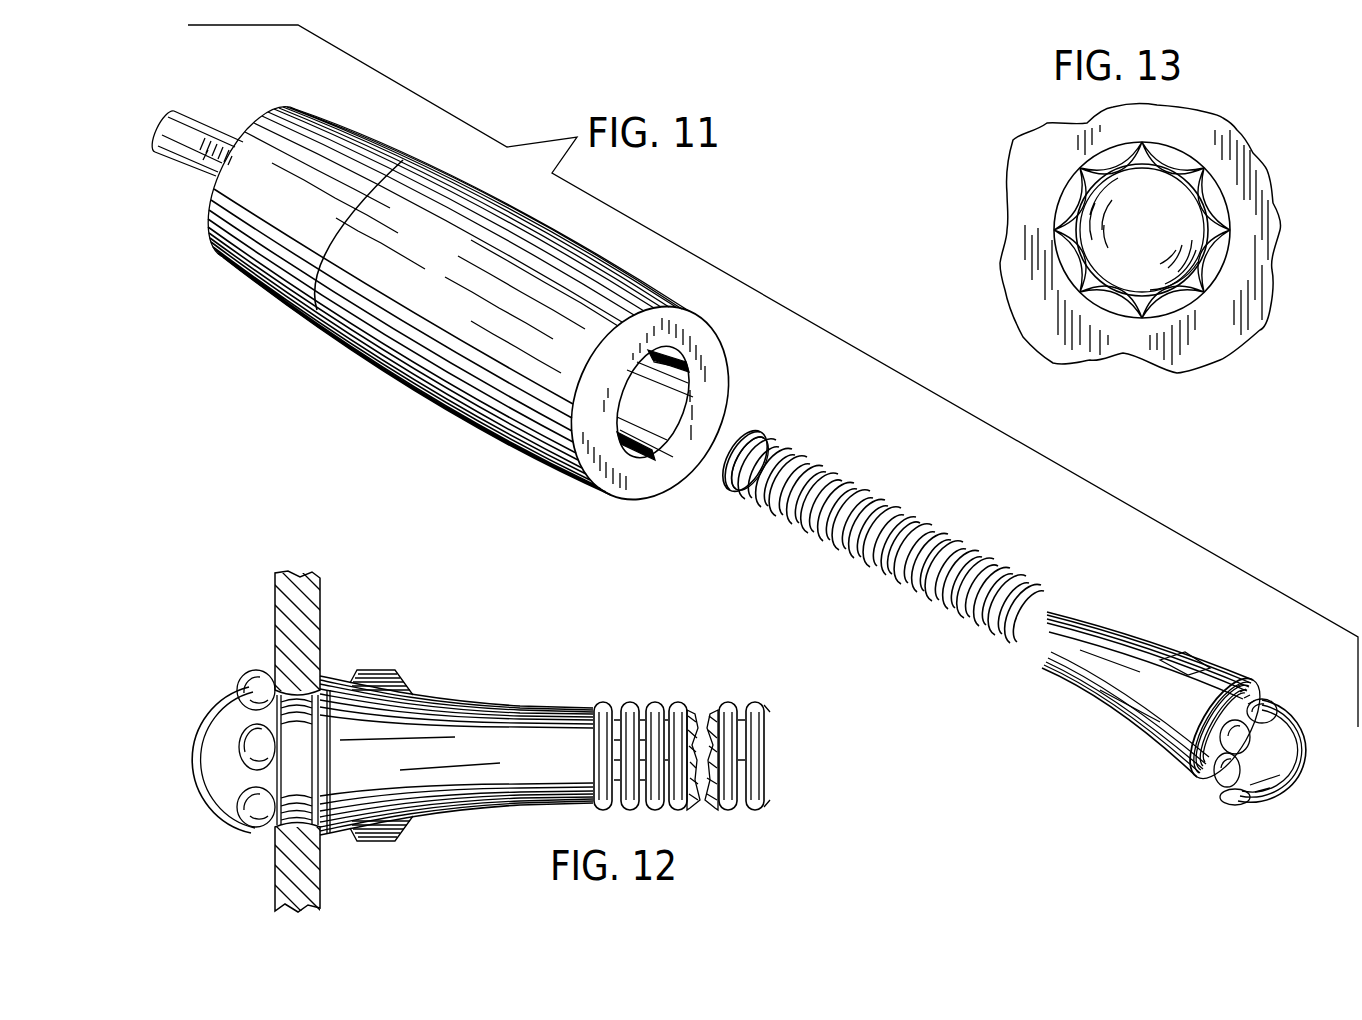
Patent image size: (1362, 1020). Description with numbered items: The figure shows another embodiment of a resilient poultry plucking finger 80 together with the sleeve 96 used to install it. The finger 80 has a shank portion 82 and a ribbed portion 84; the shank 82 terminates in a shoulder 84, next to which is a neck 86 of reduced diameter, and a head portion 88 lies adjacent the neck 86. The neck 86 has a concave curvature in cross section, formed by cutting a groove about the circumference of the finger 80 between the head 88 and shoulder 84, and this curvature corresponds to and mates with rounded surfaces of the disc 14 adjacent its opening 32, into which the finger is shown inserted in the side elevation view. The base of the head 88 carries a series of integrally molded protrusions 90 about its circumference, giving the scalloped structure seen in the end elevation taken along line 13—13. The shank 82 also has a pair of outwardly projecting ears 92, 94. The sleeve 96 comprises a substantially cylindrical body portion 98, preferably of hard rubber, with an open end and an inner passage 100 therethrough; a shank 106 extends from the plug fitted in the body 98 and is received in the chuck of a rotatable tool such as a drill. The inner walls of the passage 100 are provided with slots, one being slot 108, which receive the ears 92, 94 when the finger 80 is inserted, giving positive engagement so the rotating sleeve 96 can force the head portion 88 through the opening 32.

In FIG. 12, the disc 14 is at (320, 610).
In FIG. 13, the disc 14 is at (1253, 177).
In FIG. 12, the opening 32 is at (333, 678).
In FIG. 11, the resilient finger 80 is at (883, 590).
In FIG. 11, the shank portion 82 is at (1143, 643).
In FIG. 12, the shank portion 82 is at (485, 702).
In FIG. 11, the ribbed portion 84 is at (880, 493).
In FIG. 12, the ribbed portion 84 is at (653, 708).
In FIG. 11, the neck 86 is at (1257, 692).
In FIG. 11, the head portion 88 is at (1287, 770).
In FIG. 12, the head portion 88 is at (200, 760).
In FIG. 13, the head portion 88 is at (1167, 221).
In FIG. 11, the protrusions 90 is at (1287, 727).
In FIG. 12, the protrusions 90 is at (250, 730).
In FIG. 13, the protrusions 90 is at (1067, 172).
In FIG. 11, the ear 92 is at (1202, 653).
In FIG. 12, the ear 92 is at (378, 663).
In FIG. 12, the ear 94 is at (380, 848).
In FIG. 11, the sleeve 96 is at (352, 362).
In FIG. 11, the cylindrical body portion 98 is at (504, 416).
In FIG. 11, the inner passage 100 is at (683, 388).
In FIG. 11, the shank 106 is at (203, 113).
In FIG. 11, the slot 108 is at (680, 358).
In FIG. 12, the section line 13- 13 is at (188, 662).